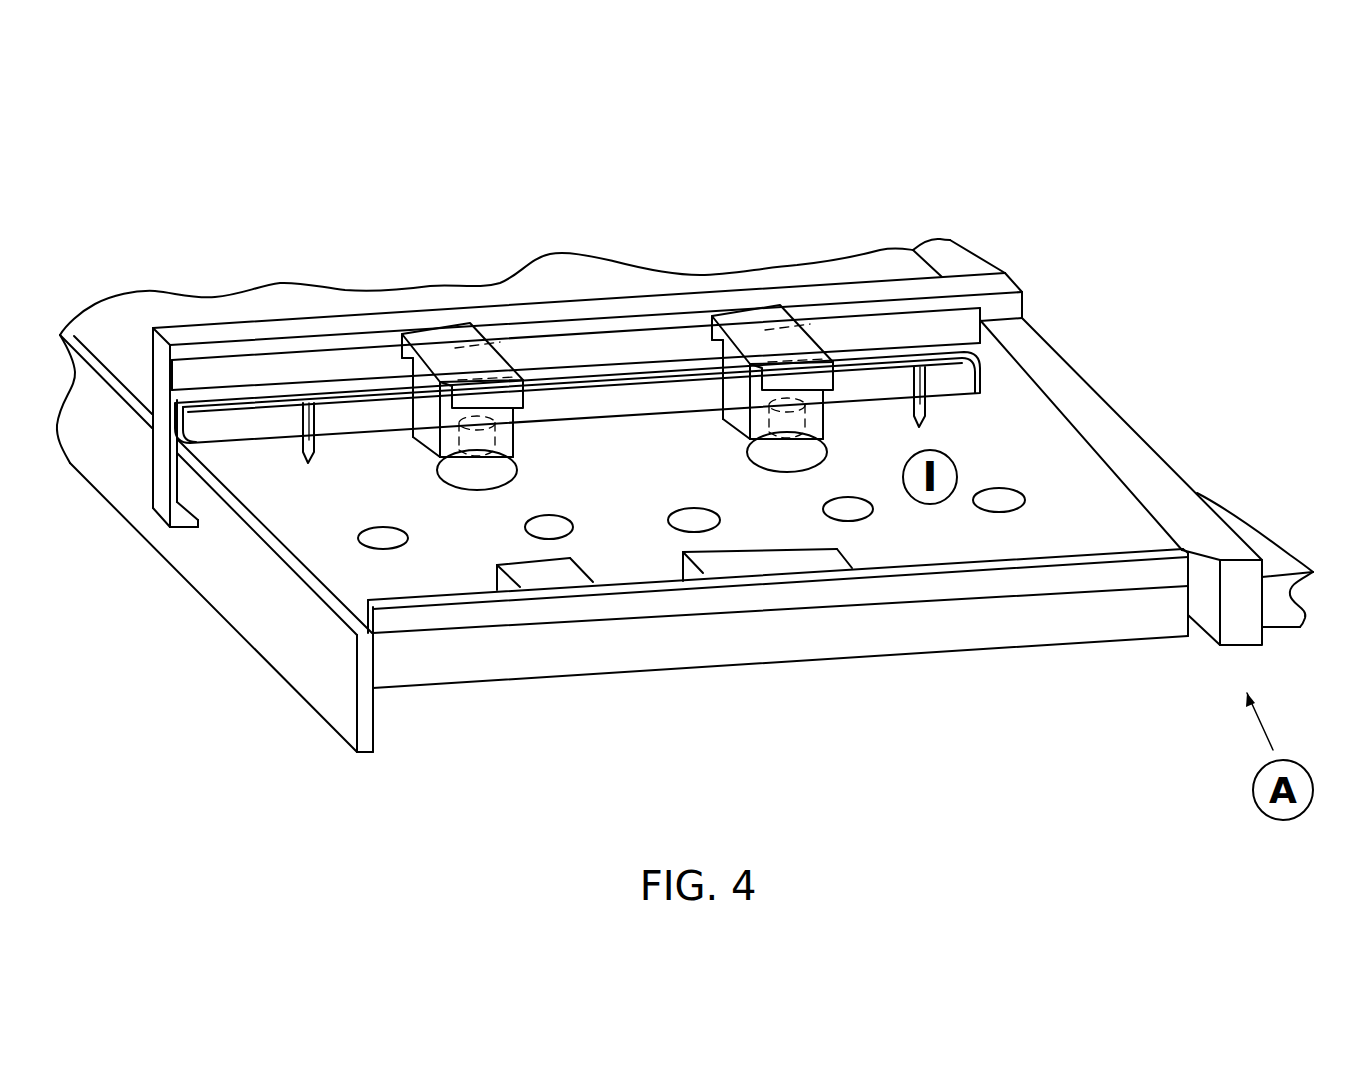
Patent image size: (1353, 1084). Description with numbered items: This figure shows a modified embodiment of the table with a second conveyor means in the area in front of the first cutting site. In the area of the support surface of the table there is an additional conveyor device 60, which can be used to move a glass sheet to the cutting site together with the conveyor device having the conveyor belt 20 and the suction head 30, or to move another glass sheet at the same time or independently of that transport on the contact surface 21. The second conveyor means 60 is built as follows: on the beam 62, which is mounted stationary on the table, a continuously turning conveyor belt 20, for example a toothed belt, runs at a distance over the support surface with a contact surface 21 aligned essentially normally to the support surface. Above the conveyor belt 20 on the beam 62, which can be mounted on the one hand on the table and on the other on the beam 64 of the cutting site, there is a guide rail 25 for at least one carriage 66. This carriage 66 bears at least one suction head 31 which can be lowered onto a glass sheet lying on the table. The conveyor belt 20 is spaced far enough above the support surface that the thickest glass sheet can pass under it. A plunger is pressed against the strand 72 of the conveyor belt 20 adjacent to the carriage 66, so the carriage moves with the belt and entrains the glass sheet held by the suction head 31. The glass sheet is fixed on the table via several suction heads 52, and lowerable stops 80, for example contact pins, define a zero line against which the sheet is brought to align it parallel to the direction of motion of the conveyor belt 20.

The conveyor belt 20 is at (613, 407).
The contact surface 21 is at (850, 582).
The guide rail 25 is at (240, 372).
The suction head 30 is at (567, 575).
The suction head 31 is at (477, 472).
The suction heads 52 is at (388, 540).
The conveyor device 60 is at (587, 345).
The beam 62 is at (365, 328).
The beam 64 is at (1160, 480).
The carriage 66 is at (447, 343).
The strand 72 is at (343, 422).
The lowerable stops 80 is at (303, 457).